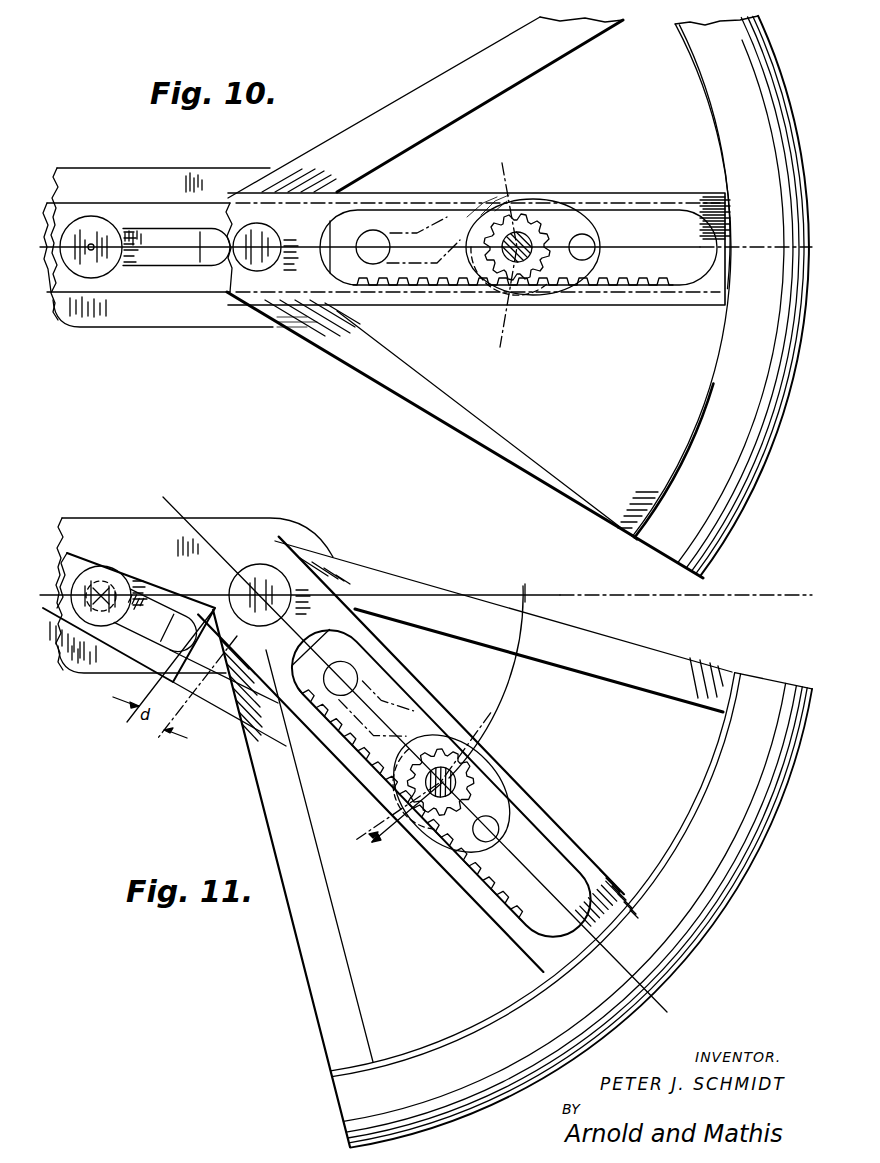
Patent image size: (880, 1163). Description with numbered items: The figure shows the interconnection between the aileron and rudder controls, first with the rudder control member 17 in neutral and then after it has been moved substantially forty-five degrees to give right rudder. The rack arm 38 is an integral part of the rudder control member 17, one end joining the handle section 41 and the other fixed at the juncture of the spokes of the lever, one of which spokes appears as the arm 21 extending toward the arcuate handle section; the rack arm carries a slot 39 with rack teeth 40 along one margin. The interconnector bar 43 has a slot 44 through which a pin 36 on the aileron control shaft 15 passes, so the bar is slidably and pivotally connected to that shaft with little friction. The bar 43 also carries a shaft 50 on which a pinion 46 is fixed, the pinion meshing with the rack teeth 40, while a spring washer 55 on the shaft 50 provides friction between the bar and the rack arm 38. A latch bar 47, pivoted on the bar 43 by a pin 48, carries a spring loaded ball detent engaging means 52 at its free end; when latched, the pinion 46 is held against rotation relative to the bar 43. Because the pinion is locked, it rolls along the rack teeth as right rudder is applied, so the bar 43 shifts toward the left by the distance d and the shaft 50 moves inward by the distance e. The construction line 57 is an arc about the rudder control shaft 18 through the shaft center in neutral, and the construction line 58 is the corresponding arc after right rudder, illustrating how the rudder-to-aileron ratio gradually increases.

In FIG. 10, the aileron control shaft 15 is at (100, 238).
In FIG. 11, the aileron control shaft 15 is at (116, 589).
In FIG. 10, the rudder control member 17 is at (498, 465).
In FIG. 11, the rudder control member 17 is at (286, 964).
In FIG. 10, the rudder control shaft 18 is at (260, 222).
In FIG. 11, the rudder control shaft 18 is at (290, 580).
In FIG. 10, the arm of sector 21 is at (418, 92).
In FIG. 11, the arm of sector 21 is at (628, 656).
In FIG. 10, the pin 36 is at (88, 214).
In FIG. 11, the pin 36 is at (104, 563).
In FIG. 10, the rack arm 38 is at (476, 265).
In FIG. 11, the rack arm 38 is at (400, 683).
In FIG. 10, the slot 39 is at (518, 221).
In FIG. 11, the slot 39 is at (414, 702).
In FIG. 10, the rack teeth 40 is at (527, 308).
In FIG. 11, the rack teeth 40 is at (456, 855).
In FIG. 10, the handle section 41 is at (736, 118).
In FIG. 11, the handle section 41 is at (722, 810).
In FIG. 10, the interconnector bar 43 is at (180, 206).
In FIG. 11, the interconnector bar 43 is at (136, 648).
In FIG. 10, the slot 44 is at (142, 262).
In FIG. 11, the slot 44 is at (160, 598).
In FIG. 10, the pinion 46 is at (533, 229).
In FIG. 11, the pinion 46 is at (482, 790).
In FIG. 10, the latch bar 47 is at (423, 214).
In FIG. 11, the latch bar 47 is at (362, 770).
In FIG. 10, the pin 48 is at (596, 212).
In FIG. 11, the pin 48 is at (522, 812).
In FIG. 10, the shaft 50 is at (512, 219).
In FIG. 11, the shaft 50 is at (466, 766).
In FIG. 10, the spring loaded ball detent engaging means 52 is at (380, 216).
In FIG. 11, the spring loaded ball detent engaging means 52 is at (312, 732).
In FIG. 10, the spring washer 55 is at (486, 292).
In FIG. 11, the spring washer 55 is at (510, 800).
In FIG. 10, the construction line 57 is at (527, 255).
In FIG. 11, the construction line 57 is at (398, 834).
In FIG. 11, the construction line 58 is at (384, 820).